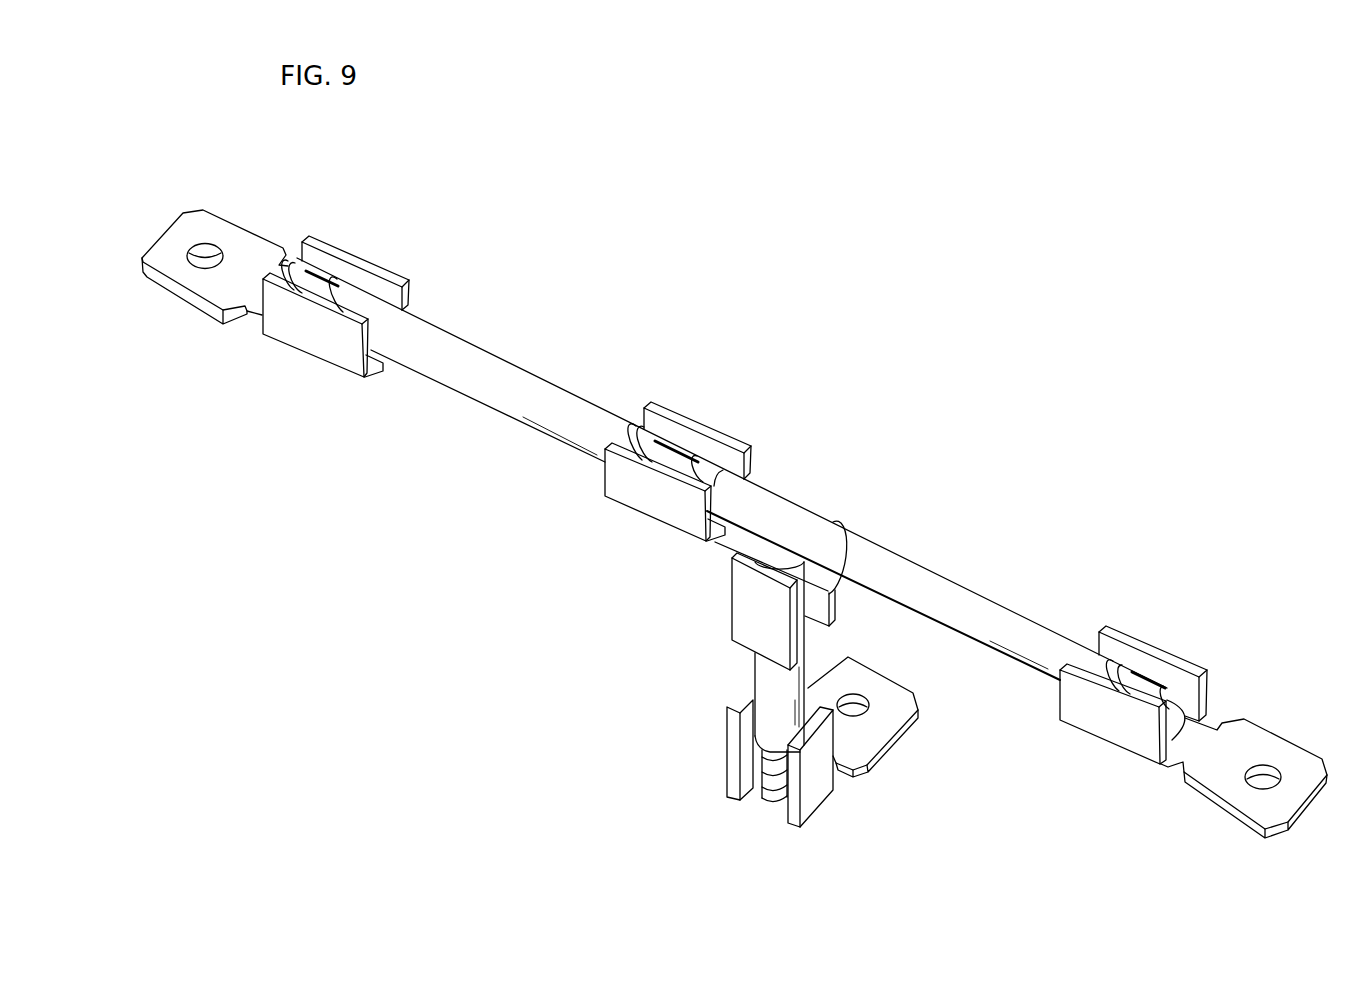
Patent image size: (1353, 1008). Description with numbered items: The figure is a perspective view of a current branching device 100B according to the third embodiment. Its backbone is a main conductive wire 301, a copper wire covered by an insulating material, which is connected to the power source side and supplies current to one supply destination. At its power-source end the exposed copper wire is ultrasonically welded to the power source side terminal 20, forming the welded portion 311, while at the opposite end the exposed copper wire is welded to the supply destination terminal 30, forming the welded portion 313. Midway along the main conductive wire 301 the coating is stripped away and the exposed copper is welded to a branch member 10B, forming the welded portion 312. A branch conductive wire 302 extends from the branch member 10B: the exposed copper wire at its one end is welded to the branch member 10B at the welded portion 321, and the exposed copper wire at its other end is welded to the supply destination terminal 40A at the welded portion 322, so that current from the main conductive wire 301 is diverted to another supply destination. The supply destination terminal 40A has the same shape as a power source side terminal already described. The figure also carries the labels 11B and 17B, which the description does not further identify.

The current branching device 100B is at (1252, 262).
The branch member 10B is at (747, 428).
The bus bar 11B is at (628, 408).
The holder 17B is at (820, 635).
The power source side terminal 20 is at (1267, 728).
The supply destination terminal 30 is at (227, 218).
The supply destination terminal 40A is at (885, 730).
The main conductive wire 301 is at (918, 577).
The branch conductive wire 302 is at (766, 670).
The welded portion 311 is at (1152, 697).
The welded portion 312 is at (688, 468).
The welded portion 313 is at (327, 292).
The welded portion 321 is at (827, 550).
The welded portion 322 is at (778, 775).